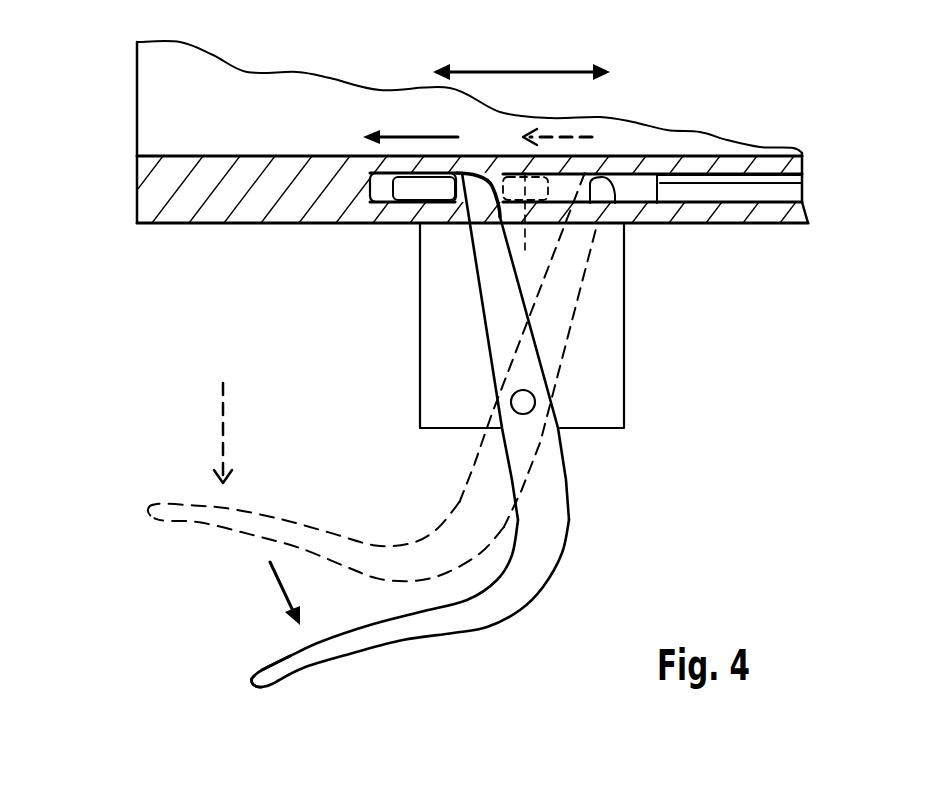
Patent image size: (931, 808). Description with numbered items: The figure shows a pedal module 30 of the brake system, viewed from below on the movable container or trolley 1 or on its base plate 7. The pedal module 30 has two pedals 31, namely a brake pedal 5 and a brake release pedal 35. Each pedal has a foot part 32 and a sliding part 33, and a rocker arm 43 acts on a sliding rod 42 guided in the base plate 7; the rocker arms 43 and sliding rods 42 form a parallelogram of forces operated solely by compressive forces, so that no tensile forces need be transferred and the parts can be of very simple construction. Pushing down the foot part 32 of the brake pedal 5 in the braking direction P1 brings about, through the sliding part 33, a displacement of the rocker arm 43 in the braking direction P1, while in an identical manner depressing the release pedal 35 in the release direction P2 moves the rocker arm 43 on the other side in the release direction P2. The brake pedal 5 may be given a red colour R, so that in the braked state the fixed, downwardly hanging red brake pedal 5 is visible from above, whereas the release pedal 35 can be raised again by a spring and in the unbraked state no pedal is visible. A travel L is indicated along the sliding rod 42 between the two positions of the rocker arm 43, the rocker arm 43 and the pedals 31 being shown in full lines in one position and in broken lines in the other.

The movable container or trolley 1 is at (137, 110).
The base plate 7 is at (190, 200).
The rocker arm 43 is at (417, 185).
The sliding rod 42 is at (712, 193).
The sliding part 33 is at (490, 258).
The pedal module 30 is at (624, 427).
The brake pedal 5 is at (320, 652).
The brake release pedal 35 is at (293, 513).
The pedal 31 is at (145, 490).
The foot part 32 is at (183, 503).
The red colour R is at (255, 688).
The travel length L is at (520, 70).
The braking force P1 is at (417, 137).
The brake release force P2 is at (563, 137).